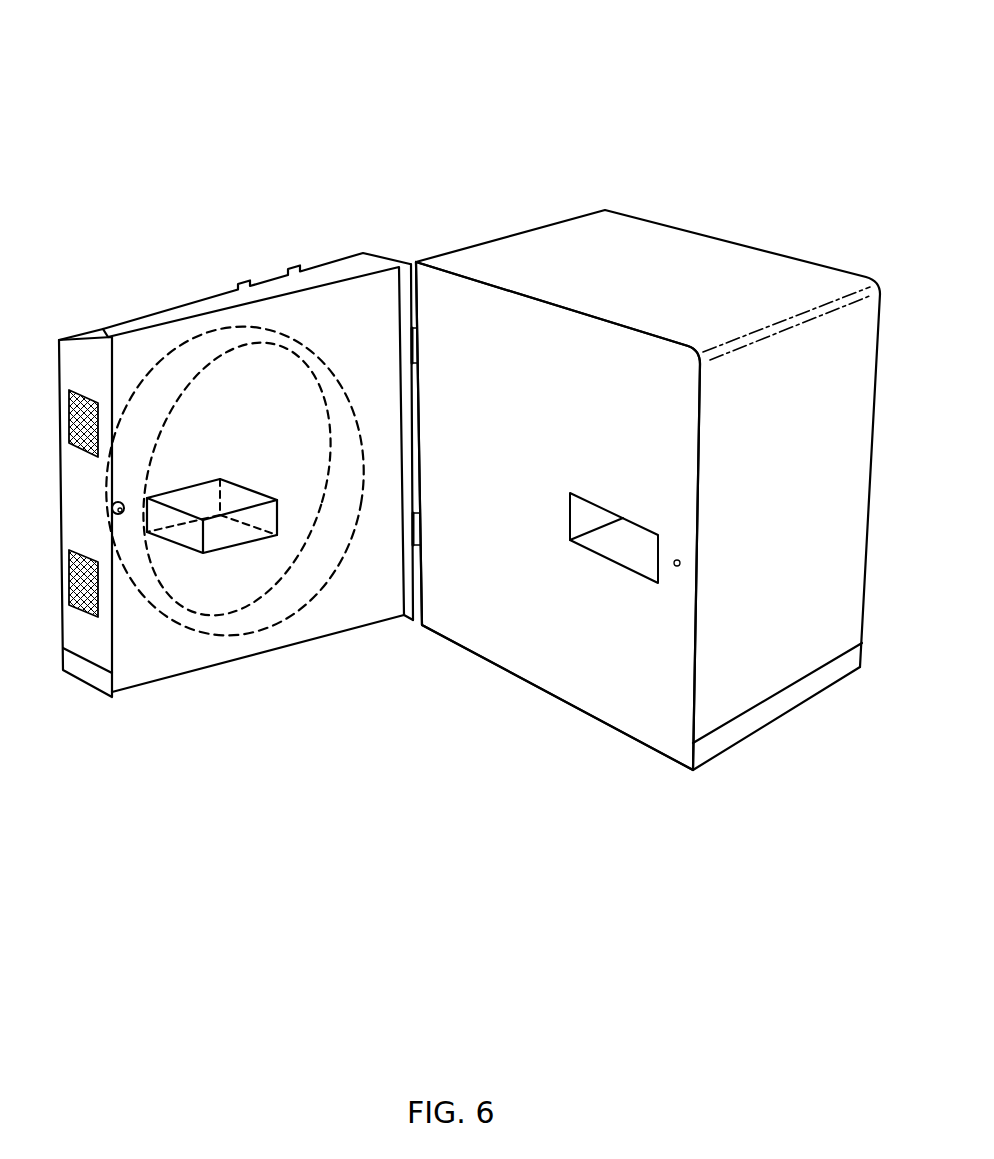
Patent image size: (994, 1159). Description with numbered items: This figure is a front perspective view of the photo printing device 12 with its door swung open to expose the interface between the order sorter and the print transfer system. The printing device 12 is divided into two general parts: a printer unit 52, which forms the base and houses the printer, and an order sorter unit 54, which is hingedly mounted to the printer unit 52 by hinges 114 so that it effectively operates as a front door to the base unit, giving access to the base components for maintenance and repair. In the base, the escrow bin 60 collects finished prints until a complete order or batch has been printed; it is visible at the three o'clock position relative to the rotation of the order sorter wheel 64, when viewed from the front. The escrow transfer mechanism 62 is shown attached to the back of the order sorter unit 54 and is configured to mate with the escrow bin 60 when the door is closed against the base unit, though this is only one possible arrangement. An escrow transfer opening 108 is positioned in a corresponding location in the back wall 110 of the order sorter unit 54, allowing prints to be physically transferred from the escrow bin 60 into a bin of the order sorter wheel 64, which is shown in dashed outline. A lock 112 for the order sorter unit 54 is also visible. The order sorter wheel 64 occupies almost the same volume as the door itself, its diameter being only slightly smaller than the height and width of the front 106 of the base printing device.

The printing device 12 is at (362, 72).
The printer unit 52 is at (667, 262).
The order sorter unit 54 is at (270, 290).
The escrow bin 60 is at (600, 525).
The escrow transfer mechanism 62 is at (237, 498).
The order sorter wheel 64 is at (343, 349).
The front 106 is at (612, 695).
The escrow transfer opening 108 is at (185, 507).
The back wall 110 is at (340, 612).
The lock 112 is at (120, 514).
The hinges 114 is at (418, 352).